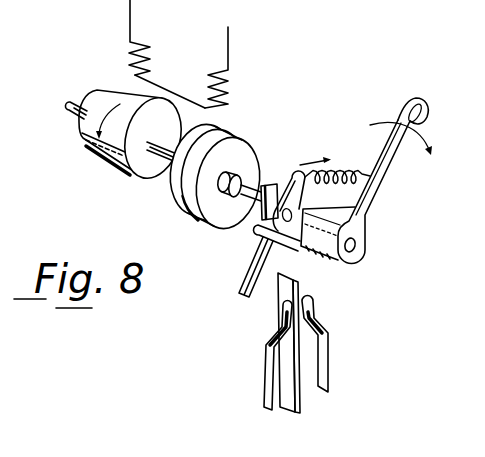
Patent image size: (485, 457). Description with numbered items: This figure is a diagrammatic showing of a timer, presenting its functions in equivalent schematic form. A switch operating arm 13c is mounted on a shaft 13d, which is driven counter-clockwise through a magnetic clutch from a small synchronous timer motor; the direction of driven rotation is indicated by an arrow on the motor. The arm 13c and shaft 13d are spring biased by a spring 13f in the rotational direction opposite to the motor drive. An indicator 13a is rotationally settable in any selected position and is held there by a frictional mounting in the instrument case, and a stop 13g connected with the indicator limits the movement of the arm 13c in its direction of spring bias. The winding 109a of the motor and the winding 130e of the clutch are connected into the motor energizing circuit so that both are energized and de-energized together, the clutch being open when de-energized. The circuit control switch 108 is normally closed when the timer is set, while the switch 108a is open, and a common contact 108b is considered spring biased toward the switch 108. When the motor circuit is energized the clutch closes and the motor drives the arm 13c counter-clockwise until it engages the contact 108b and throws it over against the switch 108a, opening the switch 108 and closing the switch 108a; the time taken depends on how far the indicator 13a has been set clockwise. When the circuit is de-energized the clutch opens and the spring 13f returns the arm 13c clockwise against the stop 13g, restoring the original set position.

The motor winding 109a is at (148, 53).
The clutch winding 130e is at (231, 72).
The indicator 13a is at (375, 195).
The switch operating arm 13c is at (252, 262).
The shaft 13d is at (274, 186).
The spring 13f is at (357, 173).
The stop 13g is at (289, 250).
The circuit control switch 108 is at (270, 382).
The switch 108a is at (313, 305).
The common contact 108b is at (279, 293).